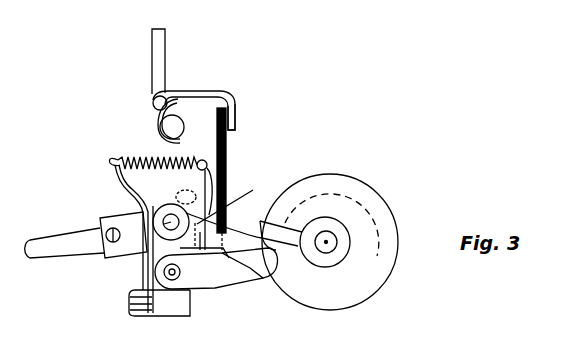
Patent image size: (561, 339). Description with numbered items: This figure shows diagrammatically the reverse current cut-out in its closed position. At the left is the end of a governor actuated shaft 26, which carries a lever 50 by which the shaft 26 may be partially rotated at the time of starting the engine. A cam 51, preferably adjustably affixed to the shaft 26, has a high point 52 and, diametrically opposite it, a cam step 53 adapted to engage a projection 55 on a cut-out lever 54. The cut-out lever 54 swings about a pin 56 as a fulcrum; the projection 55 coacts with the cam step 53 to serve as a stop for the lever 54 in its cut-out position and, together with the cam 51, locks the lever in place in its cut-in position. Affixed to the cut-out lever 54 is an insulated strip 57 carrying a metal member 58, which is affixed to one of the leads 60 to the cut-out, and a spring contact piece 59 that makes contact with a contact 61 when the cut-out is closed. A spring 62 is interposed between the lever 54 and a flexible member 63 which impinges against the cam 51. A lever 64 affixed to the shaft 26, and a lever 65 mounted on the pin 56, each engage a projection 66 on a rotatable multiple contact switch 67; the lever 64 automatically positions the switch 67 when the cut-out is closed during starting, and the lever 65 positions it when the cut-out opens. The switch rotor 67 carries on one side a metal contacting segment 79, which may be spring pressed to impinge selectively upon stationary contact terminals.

The governor actuated shaft 26 is at (145, 209).
The lever 50 is at (62, 236).
The cam 51 is at (155, 256).
The high point 52 is at (150, 240).
The cam step 53 is at (186, 198).
The cut-out lever 54 is at (203, 182).
The projection 55 is at (237, 199).
The pin 56 is at (160, 273).
The insulated strip 57 is at (231, 137).
The metal member 58 is at (192, 88).
The spring contact piece 59 is at (227, 97).
The lead 60 is at (162, 50).
The contact 61 is at (178, 128).
The spring 62 is at (140, 157).
The flexible member 63 is at (121, 178).
The lever 64 is at (248, 243).
The lever 65 is at (233, 272).
The projection 66 is at (292, 239).
The multiple contact switch 67 is at (372, 280).
The metal contacting segment 79 is at (380, 213).